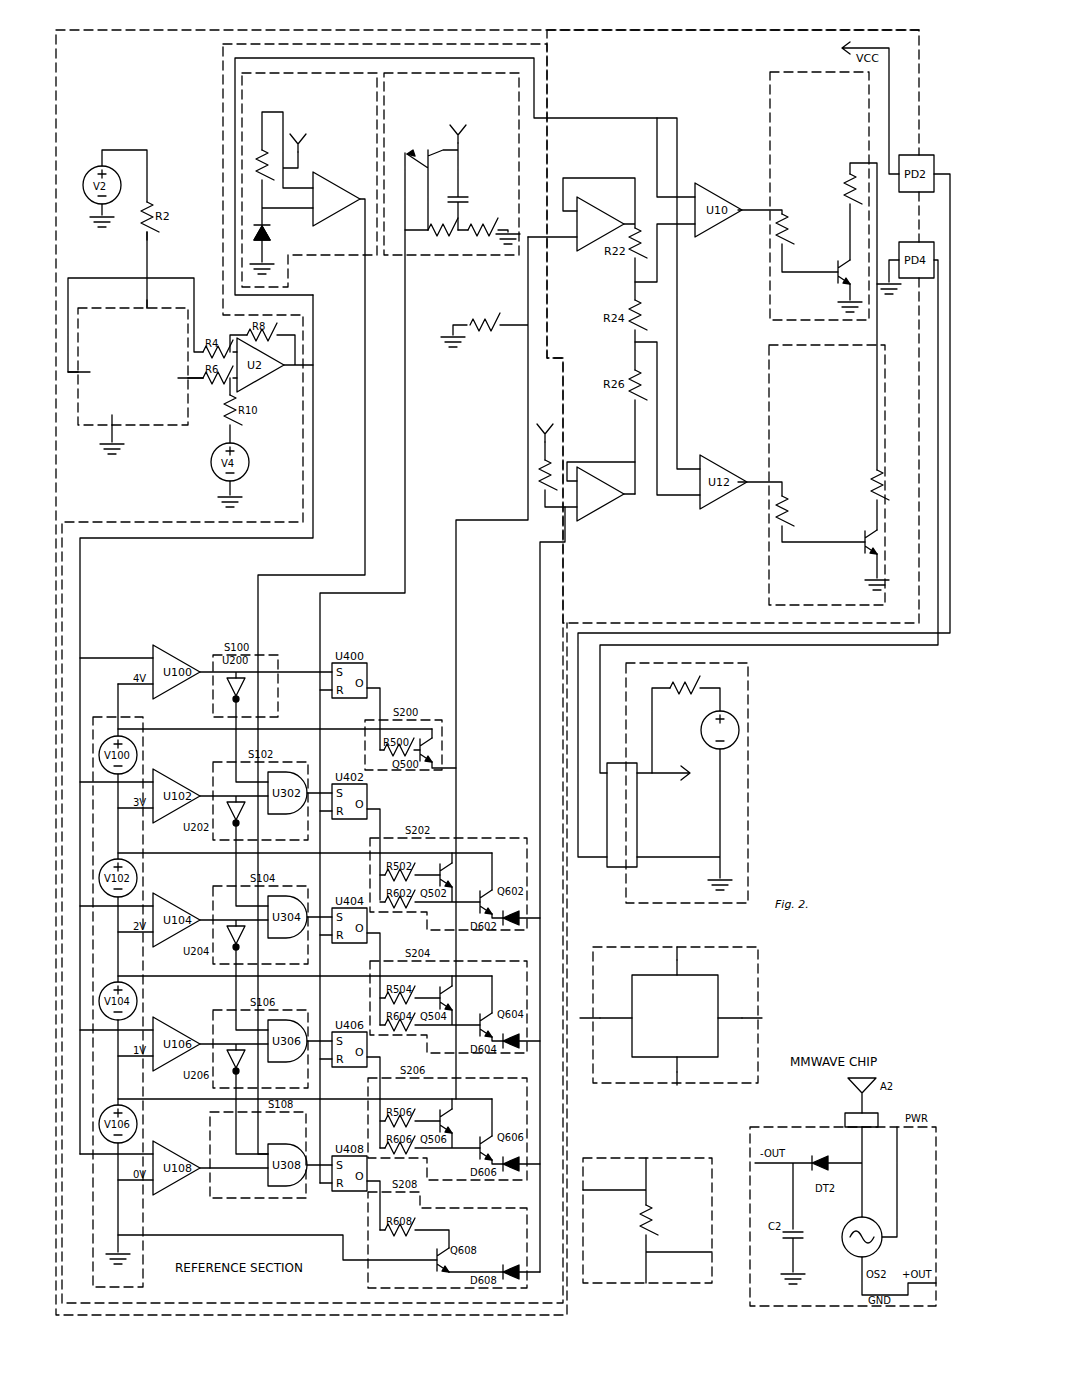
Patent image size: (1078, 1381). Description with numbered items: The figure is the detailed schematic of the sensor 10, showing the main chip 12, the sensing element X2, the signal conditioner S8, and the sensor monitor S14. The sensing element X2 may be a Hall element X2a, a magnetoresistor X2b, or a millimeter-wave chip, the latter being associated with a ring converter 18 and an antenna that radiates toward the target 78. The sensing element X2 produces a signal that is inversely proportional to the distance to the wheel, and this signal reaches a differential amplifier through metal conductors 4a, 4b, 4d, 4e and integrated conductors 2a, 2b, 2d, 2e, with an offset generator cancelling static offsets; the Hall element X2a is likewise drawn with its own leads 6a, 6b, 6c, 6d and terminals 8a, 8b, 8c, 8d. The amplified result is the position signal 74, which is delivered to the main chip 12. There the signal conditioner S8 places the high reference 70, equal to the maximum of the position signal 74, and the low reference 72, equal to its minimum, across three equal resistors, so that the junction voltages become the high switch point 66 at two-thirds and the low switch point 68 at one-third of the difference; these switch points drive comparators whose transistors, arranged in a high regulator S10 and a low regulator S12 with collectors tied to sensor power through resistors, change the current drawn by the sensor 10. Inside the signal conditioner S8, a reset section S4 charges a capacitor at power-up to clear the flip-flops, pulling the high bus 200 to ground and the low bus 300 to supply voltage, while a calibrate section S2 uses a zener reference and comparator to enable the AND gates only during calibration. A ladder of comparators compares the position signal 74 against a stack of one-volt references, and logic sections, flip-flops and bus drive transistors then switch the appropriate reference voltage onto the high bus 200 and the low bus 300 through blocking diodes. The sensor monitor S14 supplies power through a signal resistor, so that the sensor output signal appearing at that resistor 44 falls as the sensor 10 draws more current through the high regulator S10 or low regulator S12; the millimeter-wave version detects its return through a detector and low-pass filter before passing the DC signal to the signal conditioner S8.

The sensor 10 is at (852, 674).
The main chip 12 is at (733, 326).
The ring converter 18 is at (850, 1114).
The output resistor 44 is at (622, 808).
The high switch point 66 is at (660, 257).
The low switch point 68 is at (660, 368).
The high reference 70 is at (581, 193).
The low reference 72 is at (584, 471).
The position signal 74 is at (390, 606).
The target 78 is at (665, 794).
The high bus 200 is at (484, 668).
The low bus 300 is at (569, 889).
The integrated conductor 2a is at (197, 387).
The integrated conductor 2b is at (156, 270).
The integrated conductor 2d is at (124, 439).
The integrated conductor 2e is at (68, 380).
The metal conductor 4a is at (178, 371).
The metal conductor 4b is at (155, 308).
The metal conductor 4d is at (131, 418).
The metal conductor 4e is at (89, 368).
The hall cell positive output lead 6a is at (730, 1026).
The hall cell power lead 6b is at (688, 967).
The hall cell negative output lead 6c is at (616, 1026).
The hall cell ground lead 6d is at (668, 1068).
The hall element positive output terminal 8a is at (759, 1023).
The hall element power terminal 8b is at (693, 945).
The hall element negative output terminal 8c is at (586, 1023).
The hall element ground terminal 8d is at (669, 1085).
The calibrate section S2 is at (309, 613).
The reset section S4 is at (420, 628).
The signal conditioner S8 is at (312, 667).
The high regulator S10 is at (807, 271).
The low regulator S12 is at (813, 475).
The sensor monitor S14 is at (717, 783).
The sensing element X2 is at (133, 366).
The Hall element X2a is at (729, 1006).
The magnetoresistor X2b is at (647, 1204).